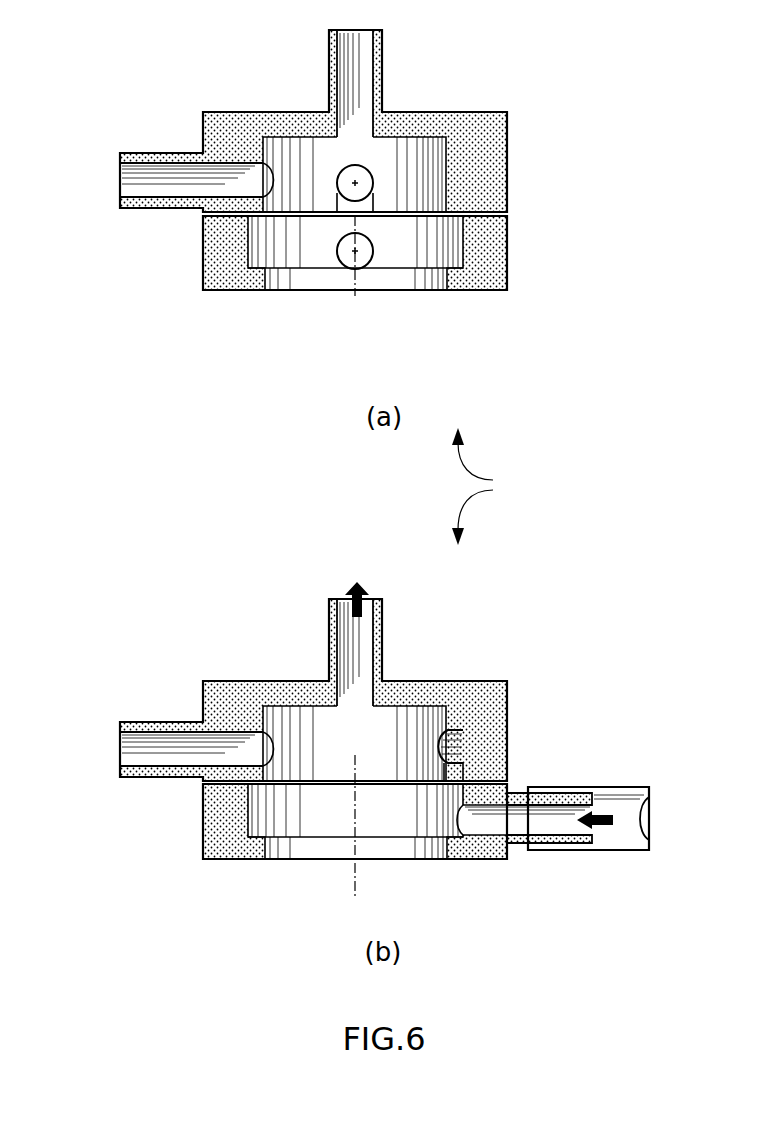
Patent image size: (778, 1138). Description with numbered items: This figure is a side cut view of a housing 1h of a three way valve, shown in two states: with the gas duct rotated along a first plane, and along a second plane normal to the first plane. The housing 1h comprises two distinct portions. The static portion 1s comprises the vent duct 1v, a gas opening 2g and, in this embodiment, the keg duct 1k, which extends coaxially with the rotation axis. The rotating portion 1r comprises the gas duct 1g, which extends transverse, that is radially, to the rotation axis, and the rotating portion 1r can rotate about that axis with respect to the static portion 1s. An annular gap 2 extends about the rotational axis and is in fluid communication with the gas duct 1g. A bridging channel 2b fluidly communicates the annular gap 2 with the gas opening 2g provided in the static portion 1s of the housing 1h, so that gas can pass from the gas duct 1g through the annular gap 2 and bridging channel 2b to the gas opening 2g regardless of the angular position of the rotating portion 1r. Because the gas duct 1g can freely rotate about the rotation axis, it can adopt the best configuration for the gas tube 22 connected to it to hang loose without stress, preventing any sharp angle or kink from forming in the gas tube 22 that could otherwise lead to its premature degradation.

The static portion 1s is at (472, 113).
The rotating portion 1r is at (480, 297).
The keg duct 1k is at (329, 44).
The vent duct 1v is at (190, 210).
The annular gap 2 is at (318, 250).
The gas opening 2g is at (340, 170).
The bridging channel 2b is at (370, 172).
The gas duct 1g is at (347, 257).
The gas tube 22 is at (598, 852).
The housing 1h is at (532, 499).